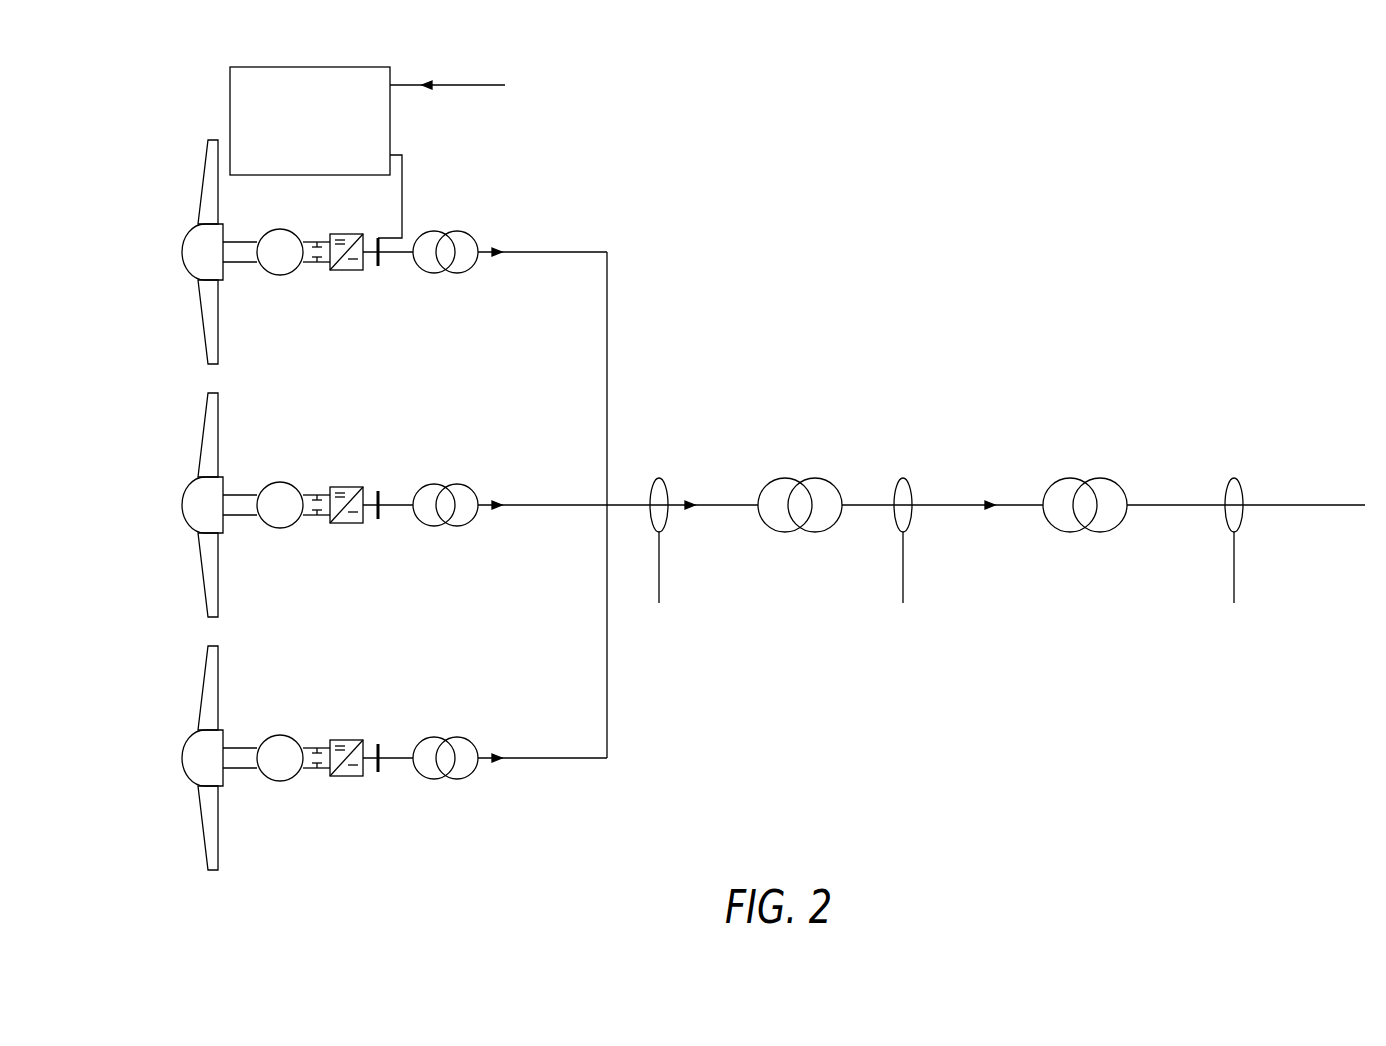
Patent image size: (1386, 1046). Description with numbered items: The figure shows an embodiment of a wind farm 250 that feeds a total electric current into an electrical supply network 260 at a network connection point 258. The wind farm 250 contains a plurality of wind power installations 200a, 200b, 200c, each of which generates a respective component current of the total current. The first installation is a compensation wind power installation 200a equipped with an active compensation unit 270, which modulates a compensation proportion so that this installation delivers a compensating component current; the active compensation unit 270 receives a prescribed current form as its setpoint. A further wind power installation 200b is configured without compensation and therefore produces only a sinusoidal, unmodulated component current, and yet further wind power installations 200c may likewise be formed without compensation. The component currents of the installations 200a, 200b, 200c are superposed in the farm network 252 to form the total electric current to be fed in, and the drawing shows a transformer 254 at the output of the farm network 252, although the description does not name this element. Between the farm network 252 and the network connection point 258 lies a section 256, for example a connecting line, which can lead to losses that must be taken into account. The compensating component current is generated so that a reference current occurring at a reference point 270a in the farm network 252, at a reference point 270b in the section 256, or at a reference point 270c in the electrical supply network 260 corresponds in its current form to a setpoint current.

The compensation wind power installation 200a is at (170, 285).
The wind power installation without compensation 200b is at (170, 538).
The further wind power installation 200c is at (170, 791).
The wind farm 250 is at (997, 237).
The farm network 252 is at (633, 422).
The first transformer 254 is at (787, 478).
The section 256 is at (930, 505).
The network connection point 258 is at (1088, 460).
The electrical supply network 260 is at (1255, 482).
The active compensation unit 270 is at (340, 48).
The reference point 270a is at (659, 565).
The reference point 270b is at (903, 563).
The reference point 270c is at (1234, 563).